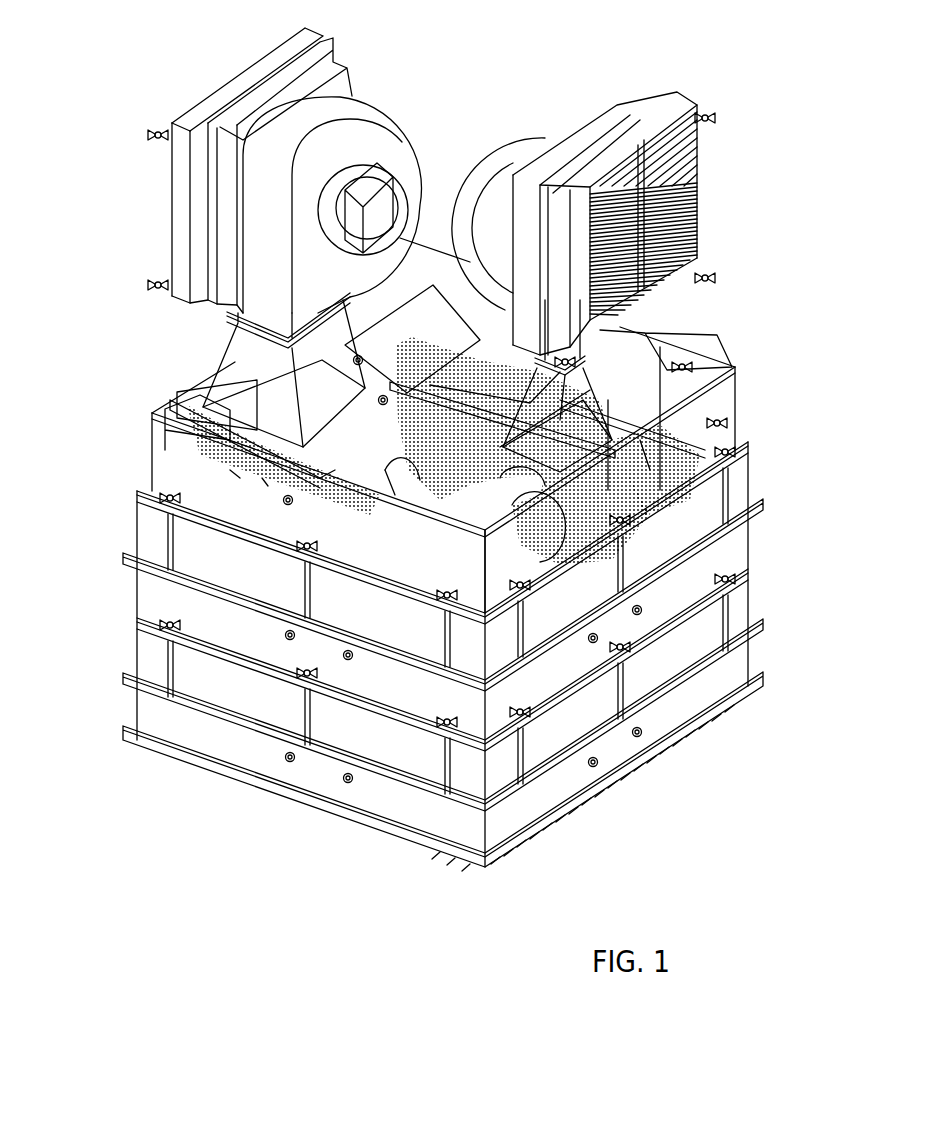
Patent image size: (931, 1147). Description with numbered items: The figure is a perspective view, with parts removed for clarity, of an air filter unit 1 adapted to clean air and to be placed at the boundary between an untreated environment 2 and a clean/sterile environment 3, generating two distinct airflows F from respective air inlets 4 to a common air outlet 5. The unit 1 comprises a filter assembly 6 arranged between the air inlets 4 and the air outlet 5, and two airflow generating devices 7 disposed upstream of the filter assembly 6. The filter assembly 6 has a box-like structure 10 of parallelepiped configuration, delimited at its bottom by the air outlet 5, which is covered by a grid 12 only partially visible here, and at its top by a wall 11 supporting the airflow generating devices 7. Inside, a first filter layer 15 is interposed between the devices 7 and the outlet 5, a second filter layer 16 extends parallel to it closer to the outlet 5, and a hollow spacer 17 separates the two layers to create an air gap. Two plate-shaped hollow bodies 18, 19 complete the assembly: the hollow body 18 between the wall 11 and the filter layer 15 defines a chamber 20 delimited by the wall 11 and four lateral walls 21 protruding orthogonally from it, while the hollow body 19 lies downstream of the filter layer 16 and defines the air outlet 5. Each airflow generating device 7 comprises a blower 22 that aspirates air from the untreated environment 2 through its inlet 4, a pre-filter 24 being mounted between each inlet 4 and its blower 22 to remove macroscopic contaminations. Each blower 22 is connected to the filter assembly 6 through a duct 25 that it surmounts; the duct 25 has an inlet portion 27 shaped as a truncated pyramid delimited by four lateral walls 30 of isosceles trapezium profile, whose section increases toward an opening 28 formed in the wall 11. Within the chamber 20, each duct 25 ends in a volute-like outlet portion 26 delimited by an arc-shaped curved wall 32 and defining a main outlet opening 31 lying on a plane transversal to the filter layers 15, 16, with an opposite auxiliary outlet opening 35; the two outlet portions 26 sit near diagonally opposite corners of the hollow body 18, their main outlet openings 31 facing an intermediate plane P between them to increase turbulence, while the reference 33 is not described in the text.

The air filter unit 1 is at (287, 825).
The untreated environment 2 is at (439, 239).
The clean/sterile environment 3 is at (392, 856).
The air inlet 4 is at (165, 172).
The air outlet 5 is at (366, 836).
The filter assembly 6 is at (434, 240).
The airflow generating device 7 is at (439, 250).
The box-like structure 10 is at (445, 684).
The wall 11 is at (443, 470).
The grid 12 is at (429, 848).
The first filter layer 15 is at (682, 540).
The second filter layer 16 is at (688, 650).
The hollow spacer 17 is at (551, 668).
The plate-shaped hollow body 18 is at (152, 442).
The plate-shaped hollow body 19 is at (186, 718).
The chamber 20 is at (443, 446).
The lateral wall 21 is at (213, 500).
The blower 22 is at (383, 143).
The pre-filter 24 is at (705, 170).
The duct 25 is at (165, 419).
The outlet portion 26 is at (338, 482).
The inlet portion 27 is at (256, 382).
The opening 28 is at (370, 352).
The lateral wall 30 is at (240, 400).
The main outlet opening 31 is at (430, 487).
The curved wall 32 is at (316, 447).
The clamp 33 is at (396, 496).
The auxiliary outlet opening 35 is at (236, 428).
The airflow F is at (466, 452).
The intermediate plane P is at (578, 560).